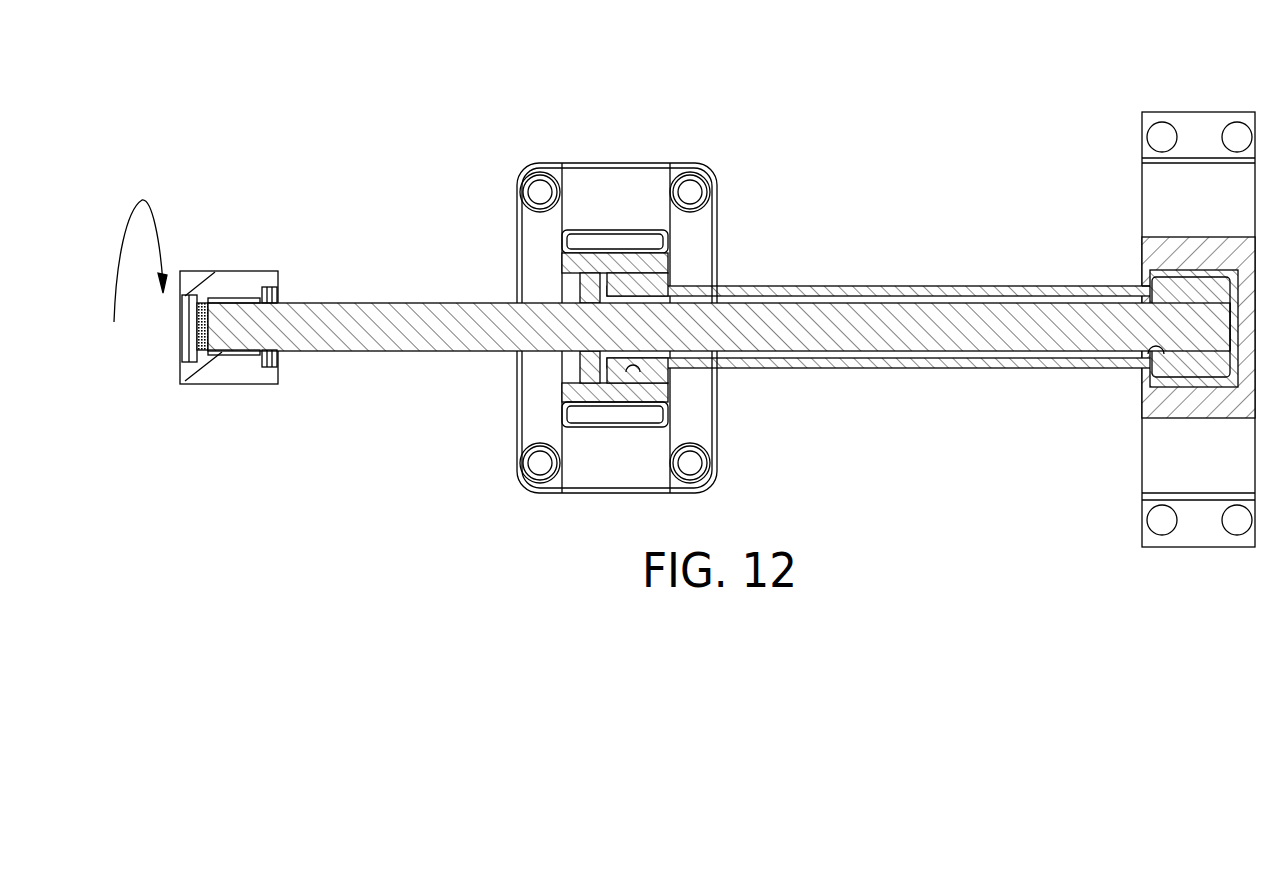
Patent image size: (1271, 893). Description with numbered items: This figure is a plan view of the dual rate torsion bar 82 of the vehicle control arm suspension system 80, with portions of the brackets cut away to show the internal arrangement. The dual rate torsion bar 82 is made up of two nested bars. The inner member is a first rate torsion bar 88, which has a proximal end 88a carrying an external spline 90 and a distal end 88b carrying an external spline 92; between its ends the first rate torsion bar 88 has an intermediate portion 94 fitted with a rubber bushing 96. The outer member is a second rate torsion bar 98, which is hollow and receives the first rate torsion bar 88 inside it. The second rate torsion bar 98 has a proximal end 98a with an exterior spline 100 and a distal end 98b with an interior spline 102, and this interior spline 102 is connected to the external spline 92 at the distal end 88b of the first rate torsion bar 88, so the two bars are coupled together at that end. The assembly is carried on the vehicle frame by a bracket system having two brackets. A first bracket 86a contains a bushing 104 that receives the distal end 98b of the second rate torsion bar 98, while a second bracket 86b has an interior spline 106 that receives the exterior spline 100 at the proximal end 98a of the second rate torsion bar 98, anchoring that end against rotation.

The vehicle control arm suspension system 80 is at (783, 102).
The dual rate torsion bar 82 is at (922, 262).
The first bracket 86a is at (1155, 175).
The second bracket 86b is at (578, 210).
The first rate torsion bar 88 is at (412, 317).
The proximal end 88a is at (232, 317).
The distal end 88b is at (1212, 325).
The external spline 90 is at (232, 353).
The external spline 92 is at (1170, 330).
The intermediate portion 94 is at (583, 364).
The rubber bushing 96 is at (583, 291).
The second rate torsion bar 98 is at (903, 370).
The proximal end 98a is at (643, 290).
The distal end 98b is at (1200, 282).
The exterior spline 100 is at (627, 270).
The interior spline 102 is at (1156, 346).
The bushing 104 is at (1167, 272).
The interior spline 106 is at (633, 372).